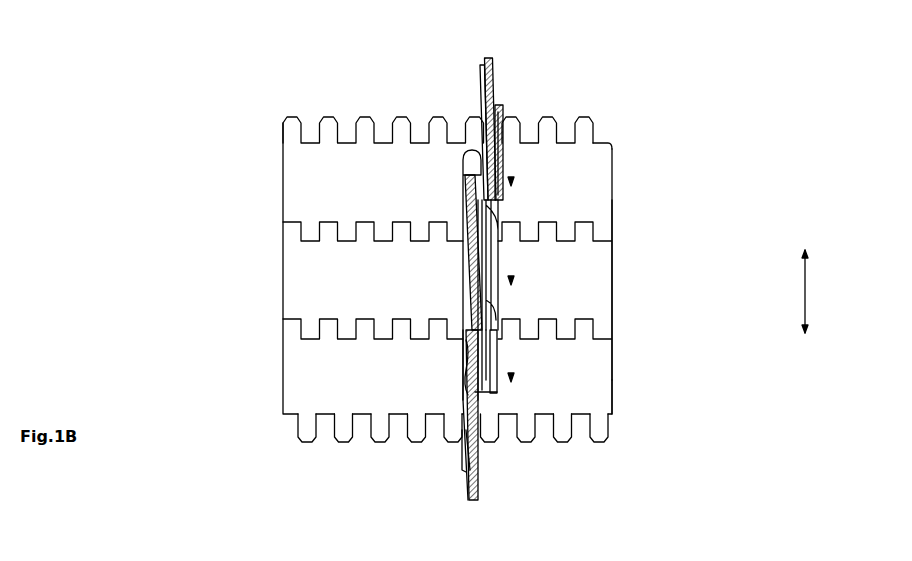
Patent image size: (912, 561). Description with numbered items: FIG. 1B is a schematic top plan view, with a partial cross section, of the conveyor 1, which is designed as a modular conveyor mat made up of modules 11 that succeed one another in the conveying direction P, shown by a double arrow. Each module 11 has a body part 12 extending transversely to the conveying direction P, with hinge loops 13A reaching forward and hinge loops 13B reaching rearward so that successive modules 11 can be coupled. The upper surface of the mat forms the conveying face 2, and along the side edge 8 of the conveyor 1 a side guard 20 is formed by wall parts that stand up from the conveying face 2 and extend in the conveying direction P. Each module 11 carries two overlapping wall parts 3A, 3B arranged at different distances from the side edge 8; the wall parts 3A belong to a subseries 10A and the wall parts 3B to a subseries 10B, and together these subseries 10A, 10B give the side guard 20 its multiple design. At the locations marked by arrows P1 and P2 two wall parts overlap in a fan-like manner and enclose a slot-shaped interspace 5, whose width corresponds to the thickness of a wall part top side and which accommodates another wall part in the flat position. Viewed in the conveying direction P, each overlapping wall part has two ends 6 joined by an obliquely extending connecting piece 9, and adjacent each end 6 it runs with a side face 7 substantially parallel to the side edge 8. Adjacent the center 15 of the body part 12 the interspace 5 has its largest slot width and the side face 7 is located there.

The conveyor 1 is at (215, 92).
The conveying face 2 is at (297, 180).
The wall part 3A is at (492, 322).
The wall part 3B is at (462, 385).
The slot-shaped interspace 5 is at (467, 198).
The end 6 is at (487, 60).
The side face 7 is at (485, 75).
The side edge 8 is at (613, 279).
The connecting piece 9 is at (500, 110).
The subseries of wall parts 10A is at (493, 393).
The subseries of wall parts 10B is at (470, 462).
The module 11 is at (318, 378).
The body part 12 is at (563, 375).
The hinge loops 13A is at (297, 428).
The hinge loops 13B is at (330, 135).
The center of the body part 15 is at (532, 185).
The side guard 20 is at (505, 58).
The conveying direction P is at (813, 291).
The arrow indicating overlap P1 is at (455, 393).
The arrow indicating overlap P2 is at (503, 170).